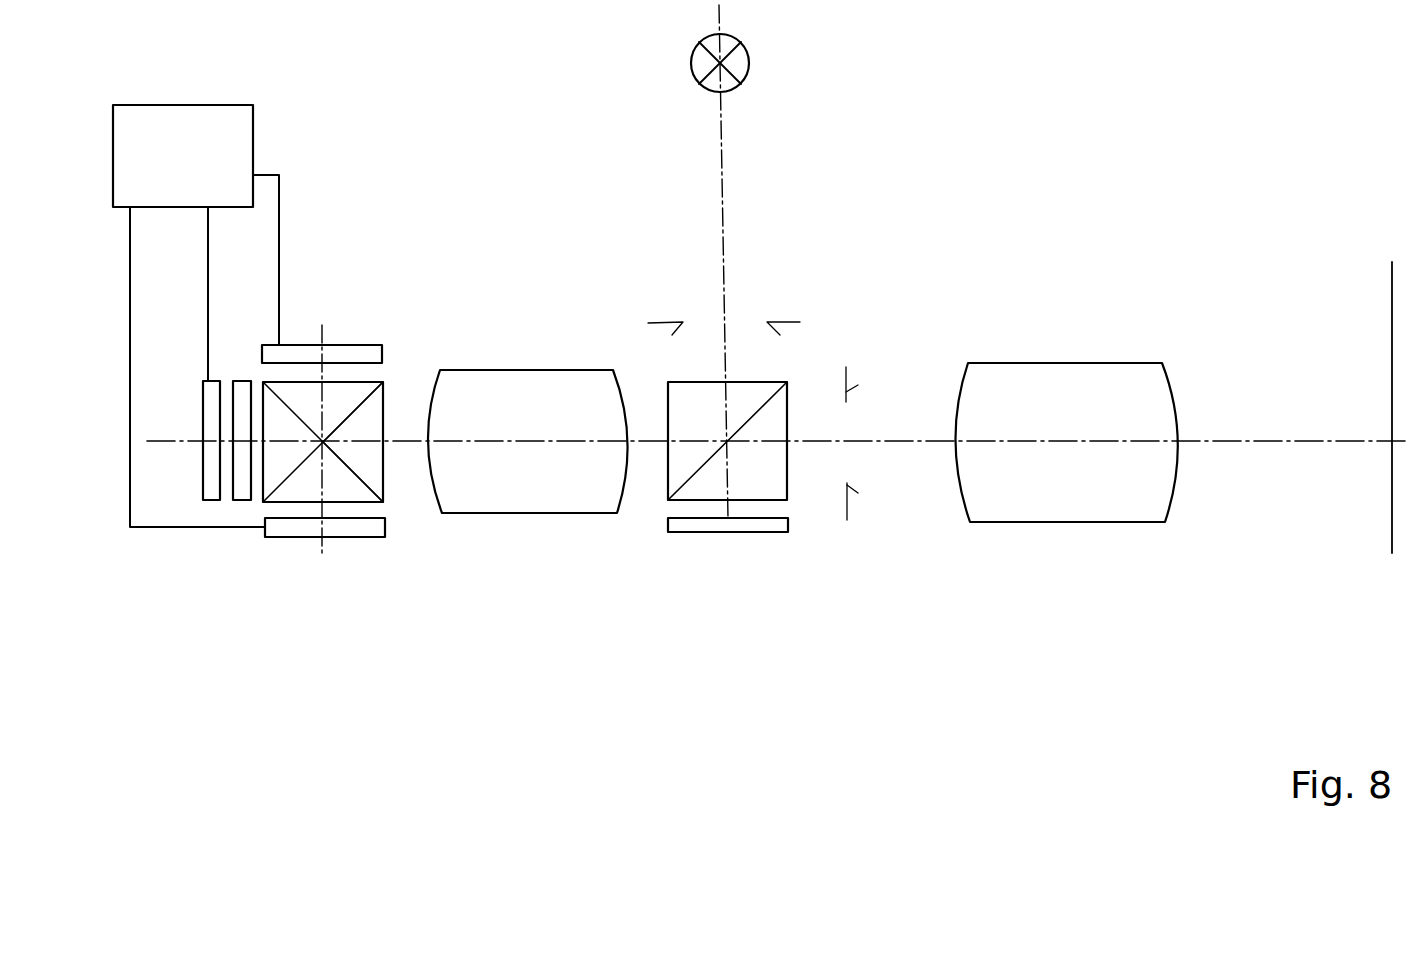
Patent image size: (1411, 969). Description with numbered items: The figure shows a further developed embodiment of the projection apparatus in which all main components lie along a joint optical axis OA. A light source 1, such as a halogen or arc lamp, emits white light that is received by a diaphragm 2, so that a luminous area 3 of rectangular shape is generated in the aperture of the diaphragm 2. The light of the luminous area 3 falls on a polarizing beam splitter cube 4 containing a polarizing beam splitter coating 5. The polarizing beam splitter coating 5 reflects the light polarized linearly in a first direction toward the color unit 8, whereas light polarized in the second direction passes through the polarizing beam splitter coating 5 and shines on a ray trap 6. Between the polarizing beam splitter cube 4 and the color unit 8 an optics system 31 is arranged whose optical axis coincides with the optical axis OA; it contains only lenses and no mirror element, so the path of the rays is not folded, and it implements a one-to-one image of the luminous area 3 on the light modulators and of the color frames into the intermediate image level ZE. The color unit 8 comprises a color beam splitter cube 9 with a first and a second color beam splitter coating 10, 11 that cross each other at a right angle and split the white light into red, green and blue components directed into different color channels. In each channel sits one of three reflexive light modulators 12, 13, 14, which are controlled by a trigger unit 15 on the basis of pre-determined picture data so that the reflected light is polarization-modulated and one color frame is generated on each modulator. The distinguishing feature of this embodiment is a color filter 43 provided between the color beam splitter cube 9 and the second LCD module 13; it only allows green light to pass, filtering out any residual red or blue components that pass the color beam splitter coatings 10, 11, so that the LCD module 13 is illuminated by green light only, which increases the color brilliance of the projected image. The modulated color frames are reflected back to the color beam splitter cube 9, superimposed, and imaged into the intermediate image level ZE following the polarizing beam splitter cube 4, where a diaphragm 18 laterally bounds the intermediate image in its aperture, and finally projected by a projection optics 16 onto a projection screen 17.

The light source 1 is at (750, 70).
The diaphragm 2 is at (792, 319).
The luminous area 3 is at (740, 314).
The polarizing beam splitter cube 4 is at (773, 382).
The polarizing beam splitter coating 5 is at (767, 400).
The ray trap 6 is at (770, 533).
The color unit 8 is at (313, 304).
The color beam splitter cube 9 is at (385, 497).
The first color beam splitter coating 10 is at (357, 406).
The second color beam splitter coating 11 is at (375, 484).
The reflexive light modulator 12 is at (302, 538).
The second LCD module 13 is at (203, 488).
The reflexive light modulator 14 is at (368, 344).
The trigger unit 15 is at (253, 134).
The projection optics 16 is at (1058, 363).
The projection screen 17 is at (1390, 275).
The diaphragm 18 is at (847, 510).
The optics system 31 is at (545, 370).
The color filter 43 is at (241, 501).
The optical axis OA is at (647, 443).
The intermediate image level ZE is at (848, 380).